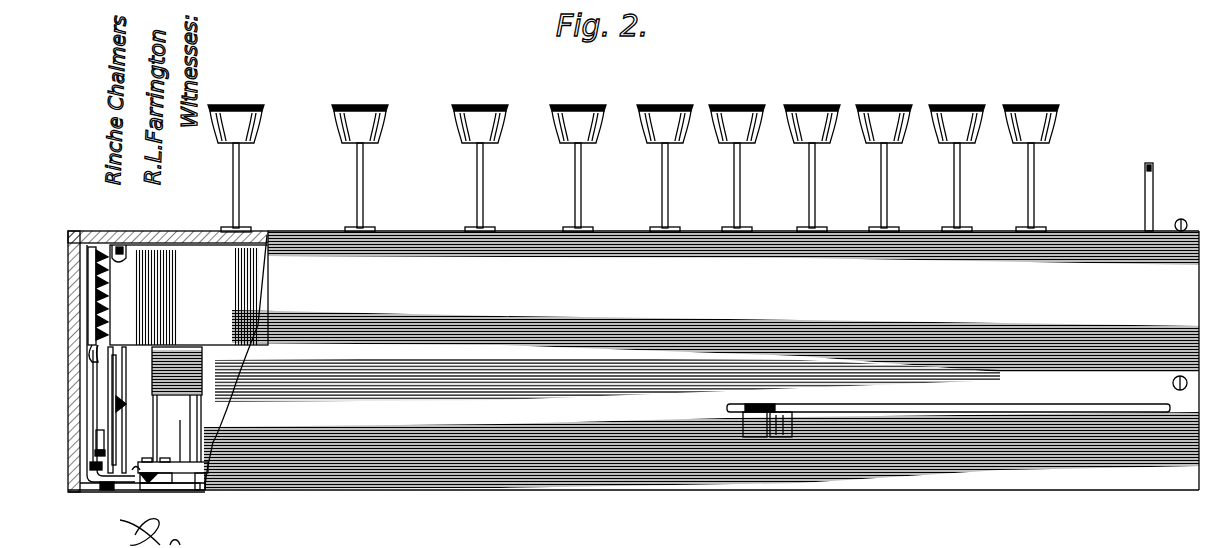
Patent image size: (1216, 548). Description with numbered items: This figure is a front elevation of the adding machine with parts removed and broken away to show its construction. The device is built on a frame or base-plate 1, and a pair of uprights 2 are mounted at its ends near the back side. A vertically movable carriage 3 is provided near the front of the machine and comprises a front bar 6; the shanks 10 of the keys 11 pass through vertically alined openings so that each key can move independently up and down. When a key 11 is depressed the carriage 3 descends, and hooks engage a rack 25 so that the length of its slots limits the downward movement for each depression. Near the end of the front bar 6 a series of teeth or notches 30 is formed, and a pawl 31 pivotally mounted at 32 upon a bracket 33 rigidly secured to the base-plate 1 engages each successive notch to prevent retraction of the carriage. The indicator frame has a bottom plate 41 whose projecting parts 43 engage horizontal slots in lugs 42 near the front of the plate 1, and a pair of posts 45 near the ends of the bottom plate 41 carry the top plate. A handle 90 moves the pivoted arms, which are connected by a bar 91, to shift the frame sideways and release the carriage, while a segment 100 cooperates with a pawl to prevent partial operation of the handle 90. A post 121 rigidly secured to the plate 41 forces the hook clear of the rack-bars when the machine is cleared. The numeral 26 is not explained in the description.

The frame or base-plate 1 is at (198, 470).
The upright 2 is at (90, 240).
The vertically movable carriage 3 is at (150, 246).
The front bar 6 is at (189, 295).
The key shank 10 is at (357, 185).
The key 11 is at (384, 134).
The rack 25 is at (112, 352).
The bar 26 is at (128, 372).
The teeth or notches 30 is at (102, 290).
The pawl 31 is at (94, 385).
The pivot 32 is at (100, 440).
The bracket 33 is at (100, 452).
The bottom plate 41 is at (156, 478).
The lug 42 is at (128, 472).
The projecting part 43 is at (118, 470).
The post 45 is at (198, 386).
The handle 90 is at (775, 406).
The bar 91 is at (199, 480).
The segment 100 is at (190, 477).
The post 121 is at (1147, 178).